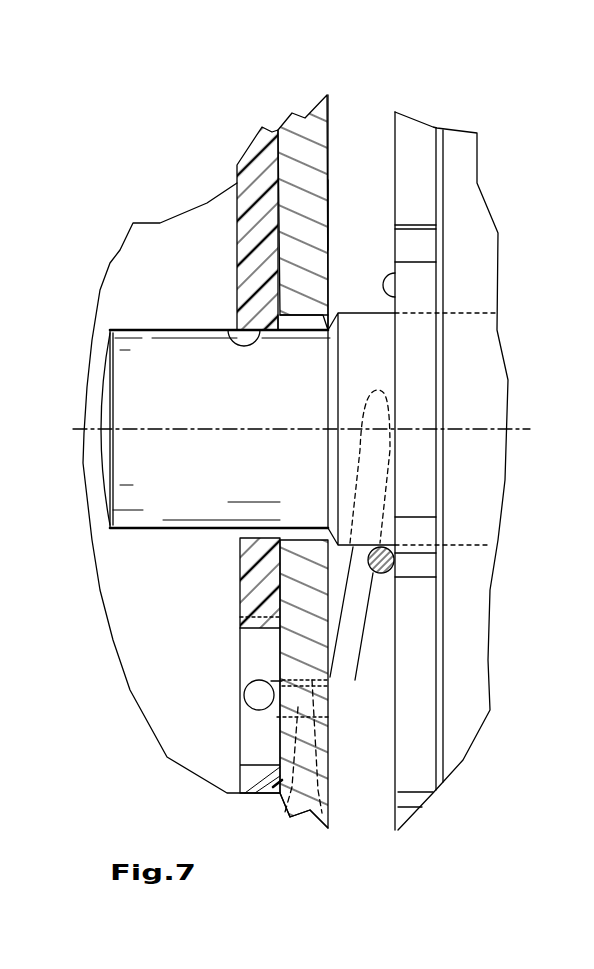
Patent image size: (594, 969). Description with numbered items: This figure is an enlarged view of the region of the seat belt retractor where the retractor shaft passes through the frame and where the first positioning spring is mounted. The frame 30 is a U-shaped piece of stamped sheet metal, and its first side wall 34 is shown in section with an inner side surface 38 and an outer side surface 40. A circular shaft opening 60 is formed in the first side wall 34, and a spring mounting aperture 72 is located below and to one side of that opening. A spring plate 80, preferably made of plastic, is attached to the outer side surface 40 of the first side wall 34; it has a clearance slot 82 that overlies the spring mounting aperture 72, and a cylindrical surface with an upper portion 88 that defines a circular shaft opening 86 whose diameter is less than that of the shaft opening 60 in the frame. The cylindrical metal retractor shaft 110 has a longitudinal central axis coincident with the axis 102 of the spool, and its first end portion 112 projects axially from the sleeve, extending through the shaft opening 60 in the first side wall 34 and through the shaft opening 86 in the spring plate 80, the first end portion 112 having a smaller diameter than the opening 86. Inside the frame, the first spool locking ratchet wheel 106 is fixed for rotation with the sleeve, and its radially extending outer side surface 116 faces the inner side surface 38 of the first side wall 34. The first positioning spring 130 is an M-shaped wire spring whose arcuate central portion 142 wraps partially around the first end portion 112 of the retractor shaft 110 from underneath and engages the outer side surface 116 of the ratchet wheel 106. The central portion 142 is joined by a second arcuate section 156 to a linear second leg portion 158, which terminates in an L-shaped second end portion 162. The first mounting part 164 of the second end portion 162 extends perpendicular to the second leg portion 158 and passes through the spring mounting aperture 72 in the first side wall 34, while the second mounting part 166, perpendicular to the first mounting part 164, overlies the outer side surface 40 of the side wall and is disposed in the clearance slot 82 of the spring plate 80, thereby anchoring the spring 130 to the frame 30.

The frame 30 is at (332, 118).
The first side wall 34 is at (332, 176).
The inner side surface 38 is at (330, 213).
The outer side surface 40 is at (257, 652).
The circular shaft opening 60 is at (305, 322).
The spring mounting aperture 72 is at (323, 823).
The spring plate 80 is at (237, 212).
The clearance slot 82 is at (260, 753).
The circular shaft opening 86 is at (263, 530).
The upper portion 88 is at (232, 343).
The axis 102 is at (250, 428).
The first spool locking ratchet wheel 106 is at (437, 192).
The retractor shaft 110 is at (145, 535).
The first end portion 112 is at (103, 475).
The outer side surface 116 is at (395, 274).
The first positioning spring 130 is at (369, 627).
The arcuate central portion 142 is at (395, 562).
The second arcuate section 156 is at (380, 418).
The second leg portion 158 is at (347, 670).
The second end portion 162 is at (245, 708).
The first mounting part 164 is at (285, 812).
The second mounting part 166 is at (243, 673).